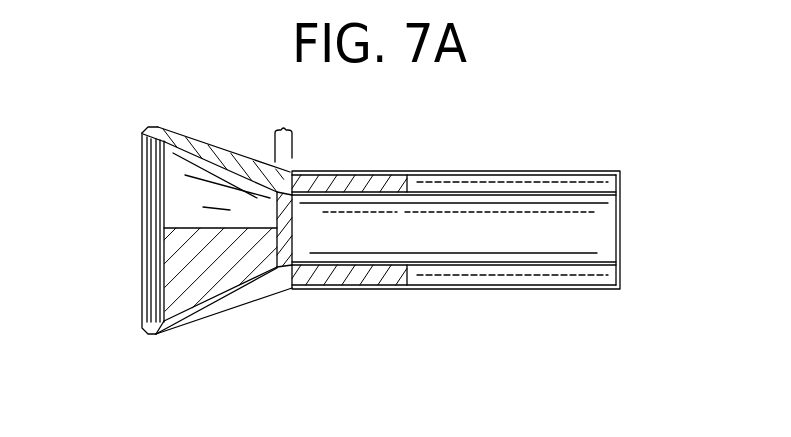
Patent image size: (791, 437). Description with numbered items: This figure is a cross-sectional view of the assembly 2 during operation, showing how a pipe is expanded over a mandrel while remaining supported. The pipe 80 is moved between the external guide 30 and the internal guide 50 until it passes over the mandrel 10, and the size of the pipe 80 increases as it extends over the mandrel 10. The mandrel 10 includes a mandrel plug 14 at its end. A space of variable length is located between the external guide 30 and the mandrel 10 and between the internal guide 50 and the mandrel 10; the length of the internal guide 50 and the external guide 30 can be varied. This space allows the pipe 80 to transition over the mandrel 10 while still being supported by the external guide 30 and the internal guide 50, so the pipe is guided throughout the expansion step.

The assembly 2 is at (117, 118).
The pipe 80 is at (210, 149).
The mandrel 10 is at (183, 261).
The mandrel plug 14 is at (142, 282).
The external guide 30 is at (477, 170).
The internal guide 50 is at (567, 210).